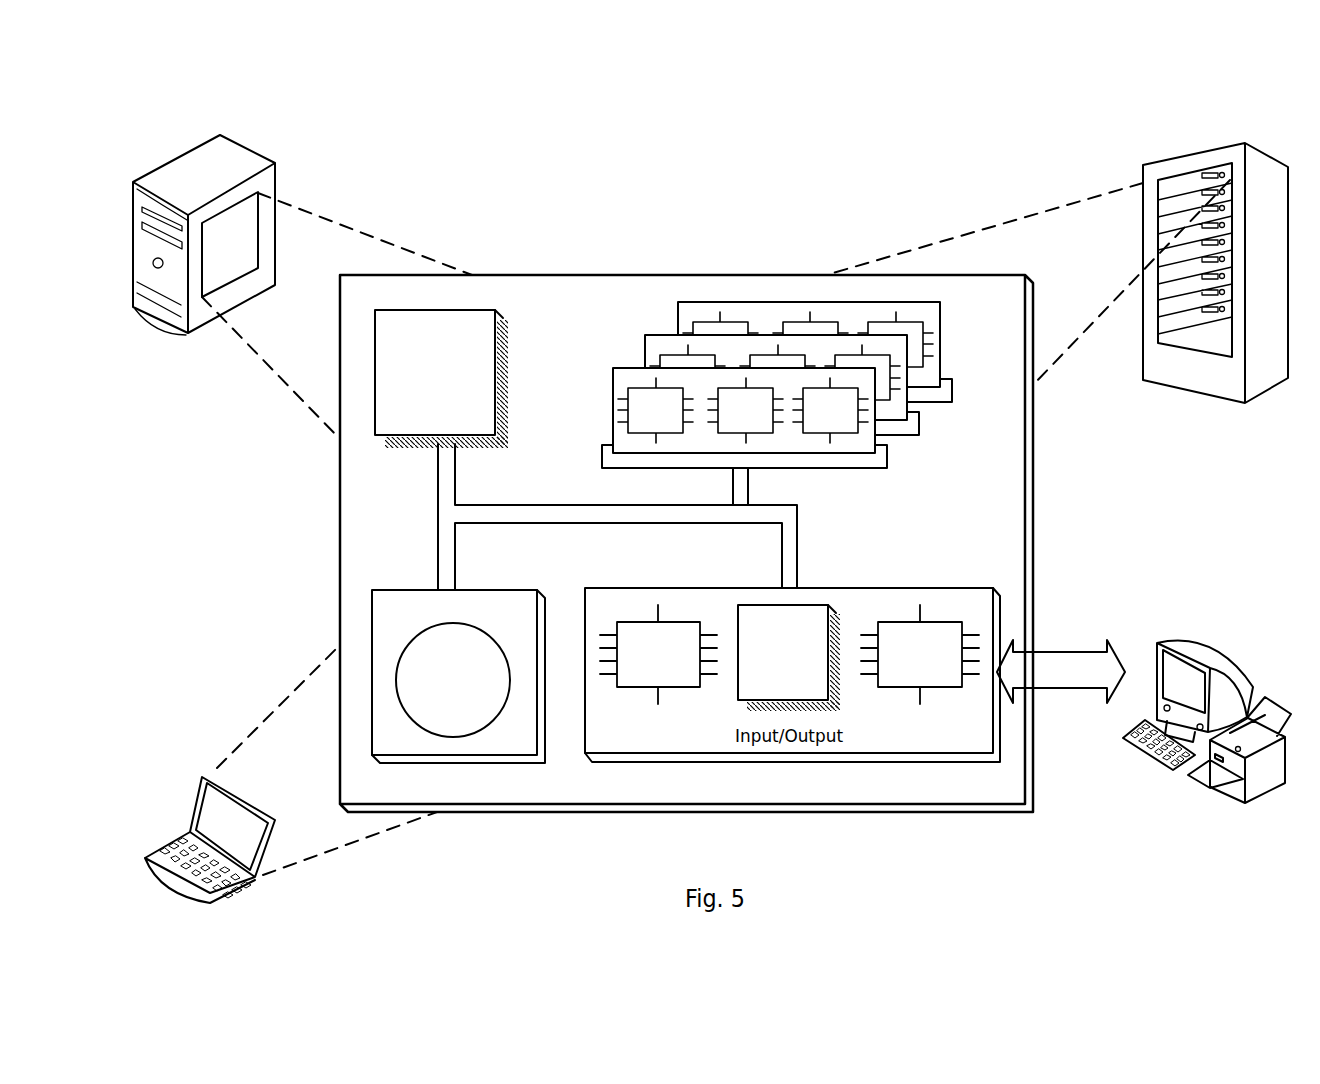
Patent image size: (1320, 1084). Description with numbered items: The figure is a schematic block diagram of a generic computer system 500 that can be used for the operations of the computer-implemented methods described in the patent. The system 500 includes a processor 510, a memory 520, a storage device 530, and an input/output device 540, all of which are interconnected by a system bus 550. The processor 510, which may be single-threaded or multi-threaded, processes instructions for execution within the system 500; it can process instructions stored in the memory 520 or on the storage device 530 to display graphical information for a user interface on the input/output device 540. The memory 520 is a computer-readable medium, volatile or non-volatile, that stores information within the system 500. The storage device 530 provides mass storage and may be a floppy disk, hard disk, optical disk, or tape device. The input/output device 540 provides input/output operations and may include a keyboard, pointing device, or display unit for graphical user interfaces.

The computer system 500 is at (552, 154).
The processor 510 is at (441, 379).
The memory 520 is at (945, 433).
The storage device 530 is at (458, 676).
The input/output device 540 is at (1158, 646).
The system bus 550 is at (617, 523).